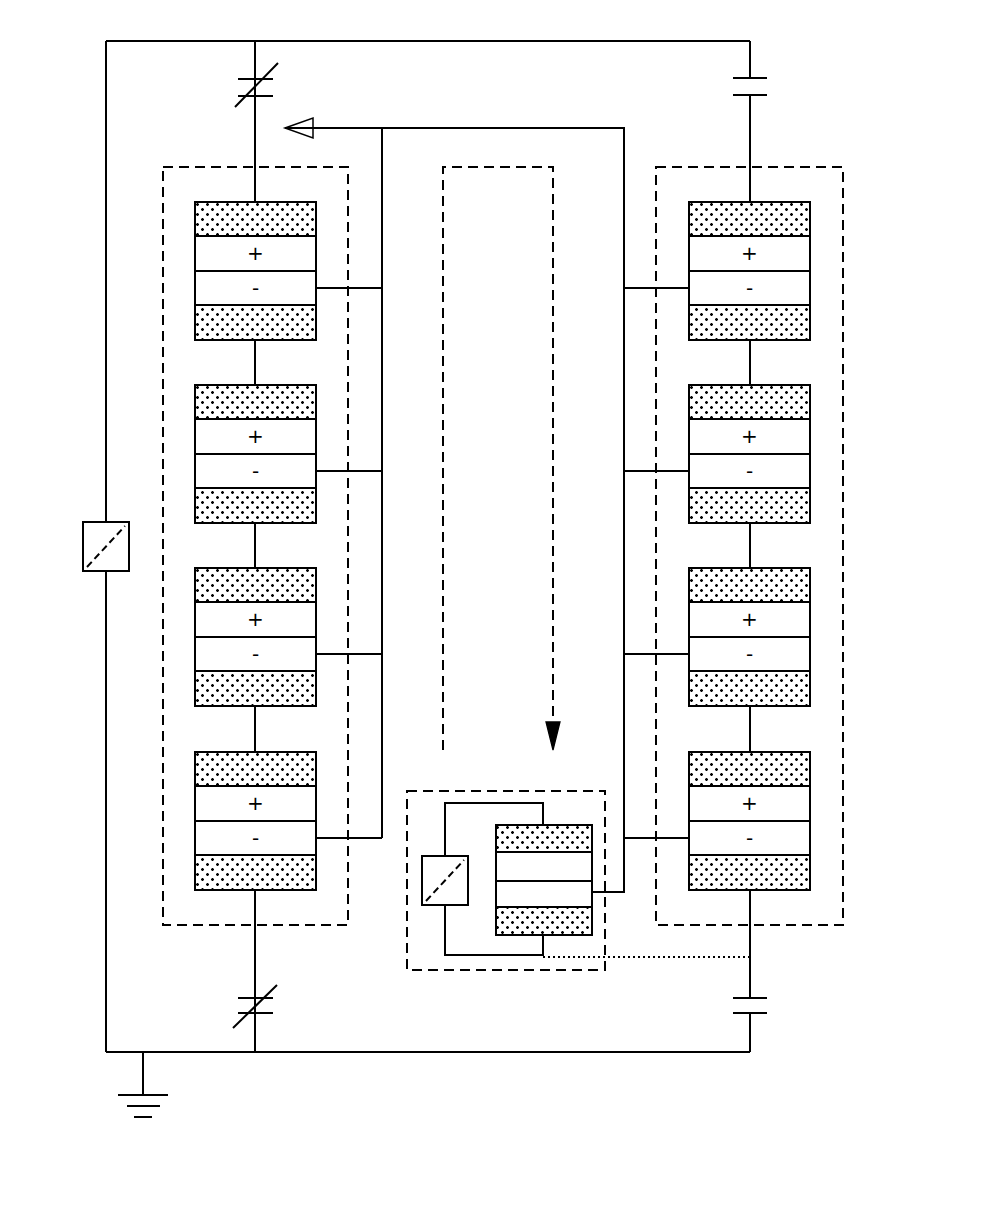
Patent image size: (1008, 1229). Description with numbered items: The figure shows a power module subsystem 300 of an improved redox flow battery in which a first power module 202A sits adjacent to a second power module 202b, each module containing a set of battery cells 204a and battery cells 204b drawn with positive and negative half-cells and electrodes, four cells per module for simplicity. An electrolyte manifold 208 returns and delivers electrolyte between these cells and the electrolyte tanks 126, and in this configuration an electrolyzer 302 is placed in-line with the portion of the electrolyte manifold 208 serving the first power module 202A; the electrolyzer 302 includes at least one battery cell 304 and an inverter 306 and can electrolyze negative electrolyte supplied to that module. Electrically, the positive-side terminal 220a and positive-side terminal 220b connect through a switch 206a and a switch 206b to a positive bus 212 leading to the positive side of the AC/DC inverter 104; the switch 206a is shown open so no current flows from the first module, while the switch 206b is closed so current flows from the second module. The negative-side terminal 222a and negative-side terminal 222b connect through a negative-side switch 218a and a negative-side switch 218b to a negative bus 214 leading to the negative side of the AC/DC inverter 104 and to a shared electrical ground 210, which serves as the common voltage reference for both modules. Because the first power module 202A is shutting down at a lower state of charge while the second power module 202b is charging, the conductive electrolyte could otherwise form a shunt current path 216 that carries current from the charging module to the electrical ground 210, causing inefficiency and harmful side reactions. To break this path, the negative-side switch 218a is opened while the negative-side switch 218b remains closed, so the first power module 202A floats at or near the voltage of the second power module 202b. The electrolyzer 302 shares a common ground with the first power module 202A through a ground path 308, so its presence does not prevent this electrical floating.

The power module subsystem 300 is at (195, 6).
The positive bus 212 is at (592, 41).
The negative bus 214 is at (617, 1052).
The electrical ground 210 is at (170, 1108).
The switch 206b is at (226, 89).
The switch 206a is at (772, 82).
The negative-side switch 218b is at (282, 1003).
The negative-side switch 218a is at (732, 1008).
The positive-side terminal 220b is at (255, 132).
The positive-side terminal 220a is at (750, 118).
The negative-side terminal 222b is at (255, 953).
The negative-side terminal 222a is at (750, 944).
The electrolyte manifold 208 is at (536, 128).
The electrolyte tanks 126 is at (514, 113).
The shunt current path 216 is at (553, 684).
The second power module 202b is at (202, 167).
The first power module 202A is at (805, 167).
The battery cells 204b is at (195, 218).
The battery cells 204a is at (810, 265).
The AC/DC inverter 104 is at (82, 540).
The electrolyzer 302 is at (480, 791).
The battery cell 304 is at (557, 935).
The inverter 306 is at (430, 905).
The ground path 308 is at (704, 957).